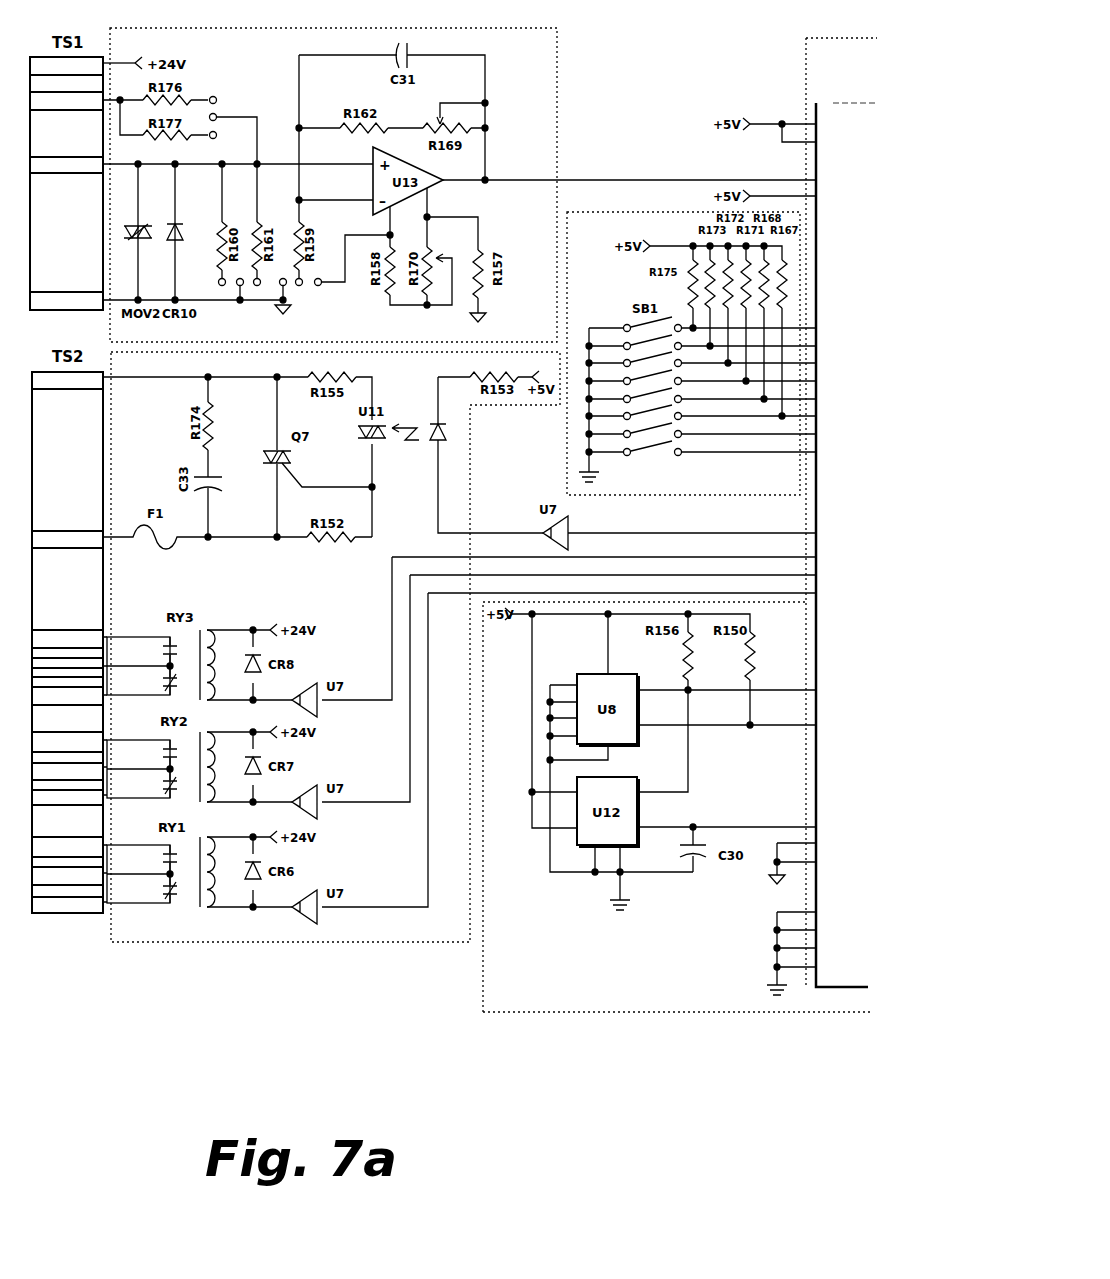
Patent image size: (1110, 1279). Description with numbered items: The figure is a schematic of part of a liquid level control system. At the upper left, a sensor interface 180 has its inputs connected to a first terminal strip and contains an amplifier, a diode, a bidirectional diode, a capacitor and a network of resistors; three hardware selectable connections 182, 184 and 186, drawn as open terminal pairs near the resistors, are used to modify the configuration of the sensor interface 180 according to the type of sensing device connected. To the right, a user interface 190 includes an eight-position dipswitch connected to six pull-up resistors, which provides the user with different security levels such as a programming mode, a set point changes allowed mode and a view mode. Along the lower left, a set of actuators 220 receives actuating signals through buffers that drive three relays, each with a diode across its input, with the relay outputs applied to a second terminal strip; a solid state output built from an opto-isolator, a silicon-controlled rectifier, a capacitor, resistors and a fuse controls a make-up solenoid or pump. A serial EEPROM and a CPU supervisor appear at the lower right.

The sensor interface 180 is at (557, 85).
The hardware selectable connection 182 is at (268, 82).
The hardware selectable connection 184 is at (232, 290).
The hardware selectable connection 186 is at (300, 290).
The user interface 190 is at (630, 212).
The set of actuators 220 is at (306, 687).